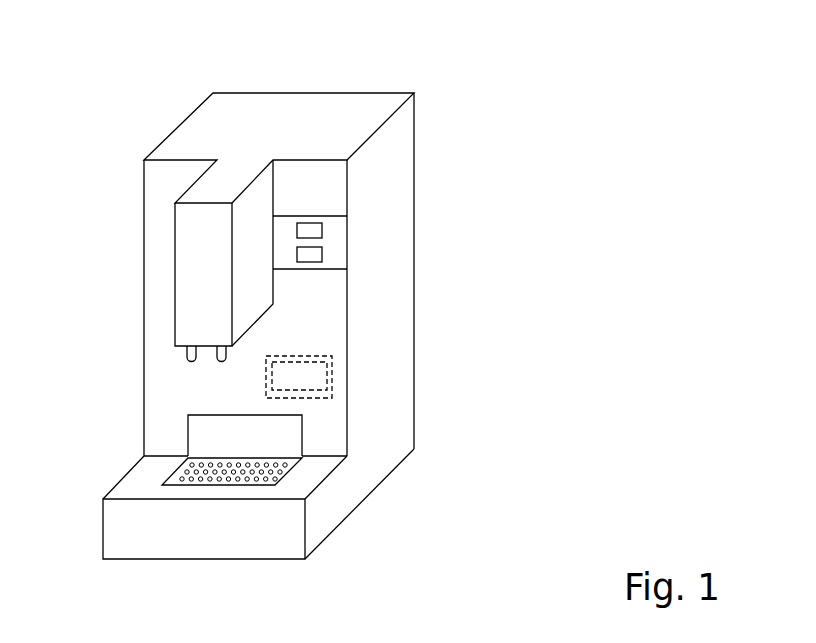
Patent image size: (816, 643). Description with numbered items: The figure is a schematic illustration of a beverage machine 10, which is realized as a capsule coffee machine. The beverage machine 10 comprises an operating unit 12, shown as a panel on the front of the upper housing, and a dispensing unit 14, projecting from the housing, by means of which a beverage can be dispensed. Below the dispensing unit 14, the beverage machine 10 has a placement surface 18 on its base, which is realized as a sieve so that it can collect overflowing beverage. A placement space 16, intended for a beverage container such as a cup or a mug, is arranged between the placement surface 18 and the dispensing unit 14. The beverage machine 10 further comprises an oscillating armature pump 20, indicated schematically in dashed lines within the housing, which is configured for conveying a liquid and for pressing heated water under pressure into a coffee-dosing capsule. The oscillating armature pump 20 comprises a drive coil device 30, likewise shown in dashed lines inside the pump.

The beverage machine 10 is at (92, 111).
The operating unit 12 is at (332, 240).
The dispensing unit 14 is at (203, 280).
The placement space 16 is at (184, 374).
The placement surface 18 is at (183, 467).
The oscillating armature pump 20 is at (332, 373).
The drive coil device 30 is at (332, 384).